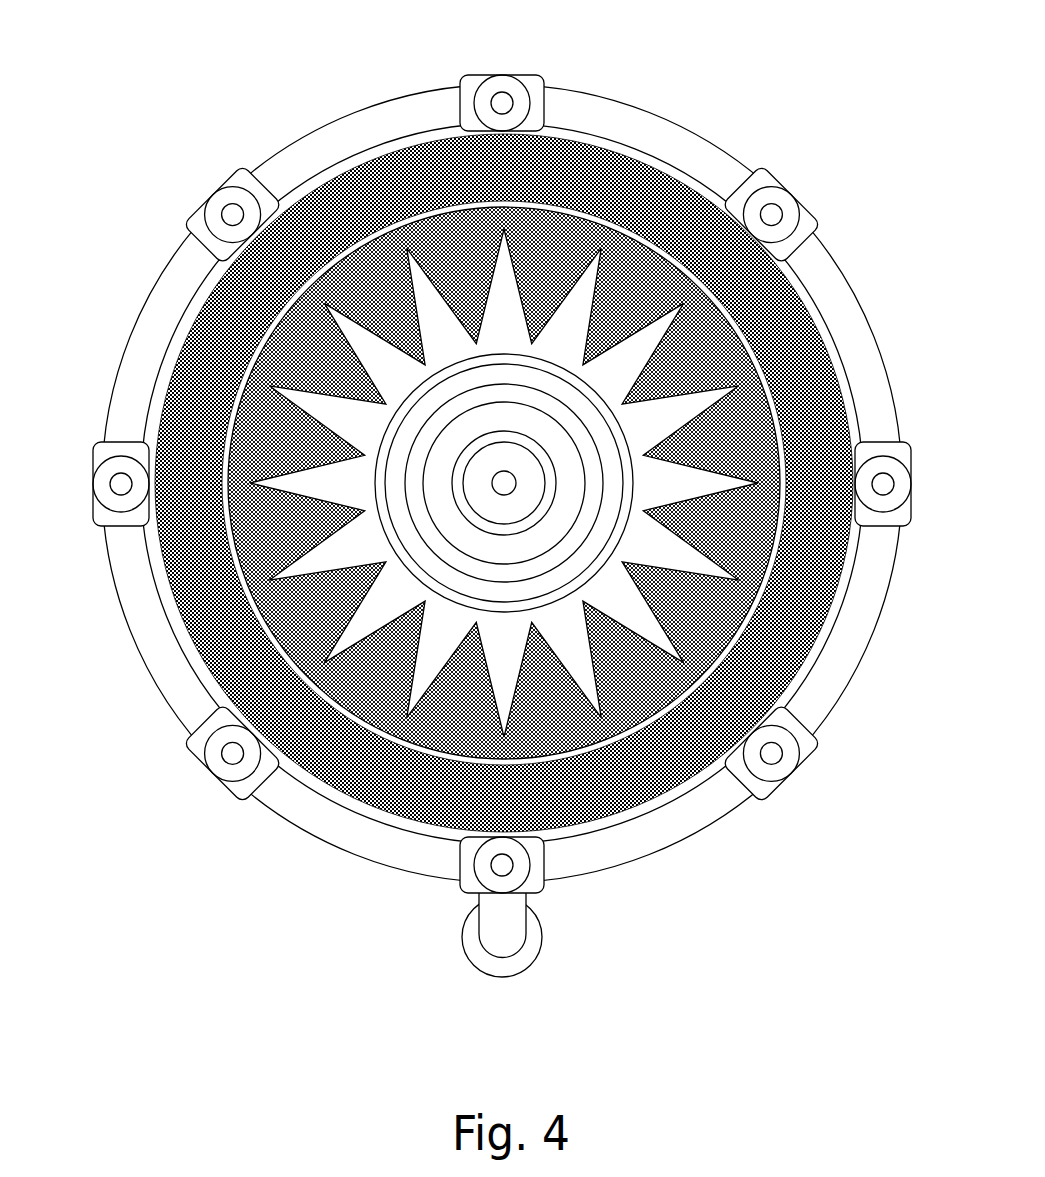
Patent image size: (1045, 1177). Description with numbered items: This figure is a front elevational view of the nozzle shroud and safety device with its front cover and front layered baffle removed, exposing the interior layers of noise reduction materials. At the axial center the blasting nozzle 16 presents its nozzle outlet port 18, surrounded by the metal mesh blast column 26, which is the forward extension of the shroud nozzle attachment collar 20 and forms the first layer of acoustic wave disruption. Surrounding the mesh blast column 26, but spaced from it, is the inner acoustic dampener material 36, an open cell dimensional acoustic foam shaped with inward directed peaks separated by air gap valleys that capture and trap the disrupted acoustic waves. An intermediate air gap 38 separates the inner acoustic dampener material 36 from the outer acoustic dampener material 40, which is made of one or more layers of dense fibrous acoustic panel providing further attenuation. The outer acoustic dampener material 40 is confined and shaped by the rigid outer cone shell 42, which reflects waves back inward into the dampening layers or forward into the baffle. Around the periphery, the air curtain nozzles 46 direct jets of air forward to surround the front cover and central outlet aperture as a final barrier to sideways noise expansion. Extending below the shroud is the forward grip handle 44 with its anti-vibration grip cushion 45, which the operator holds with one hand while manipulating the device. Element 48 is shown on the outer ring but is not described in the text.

The blasting nozzle 16 is at (528, 466).
The nozzle outlet port 18 is at (512, 487).
The shroud nozzle attachment collar 20 is at (537, 397).
The metal mesh blast column 26 is at (368, 485).
The inner acoustic dampener material 36 is at (265, 410).
The intermediate air gap 38 is at (280, 330).
The outer acoustic dampener material 40 is at (323, 213).
The outer cone shell 42 is at (372, 152).
The forward grip handle 44 is at (478, 898).
The anti-vibration grip cushion 45 is at (542, 938).
The peripheral air curtain nozzles 46 is at (504, 80).
The outer frame ring 48 is at (437, 92).